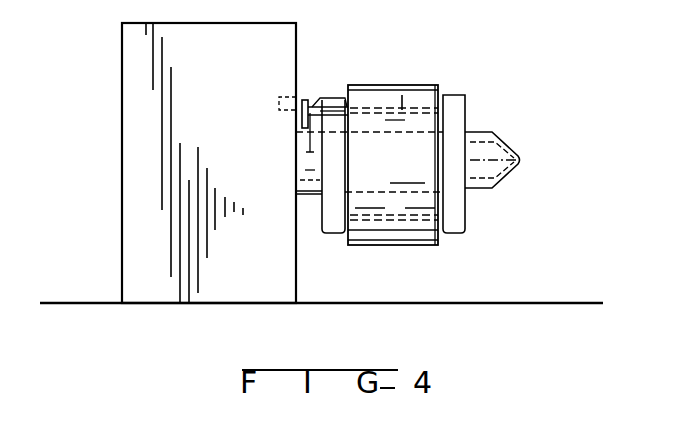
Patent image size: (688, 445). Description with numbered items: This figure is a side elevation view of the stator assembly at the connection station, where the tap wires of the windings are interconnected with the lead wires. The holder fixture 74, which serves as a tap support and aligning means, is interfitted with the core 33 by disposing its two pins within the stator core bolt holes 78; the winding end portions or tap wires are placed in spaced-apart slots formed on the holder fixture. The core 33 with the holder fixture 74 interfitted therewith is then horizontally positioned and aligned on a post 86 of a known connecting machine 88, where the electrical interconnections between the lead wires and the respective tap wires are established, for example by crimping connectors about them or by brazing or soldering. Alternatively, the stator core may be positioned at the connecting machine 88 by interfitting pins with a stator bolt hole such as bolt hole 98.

The connecting machine 88 is at (122, 68).
The holder fixture 74 is at (307, 98).
The core 33 is at (365, 85).
The stator core bolt holes 78 is at (402, 95).
The bolt hole 98 is at (395, 220).
The post 86 is at (490, 132).